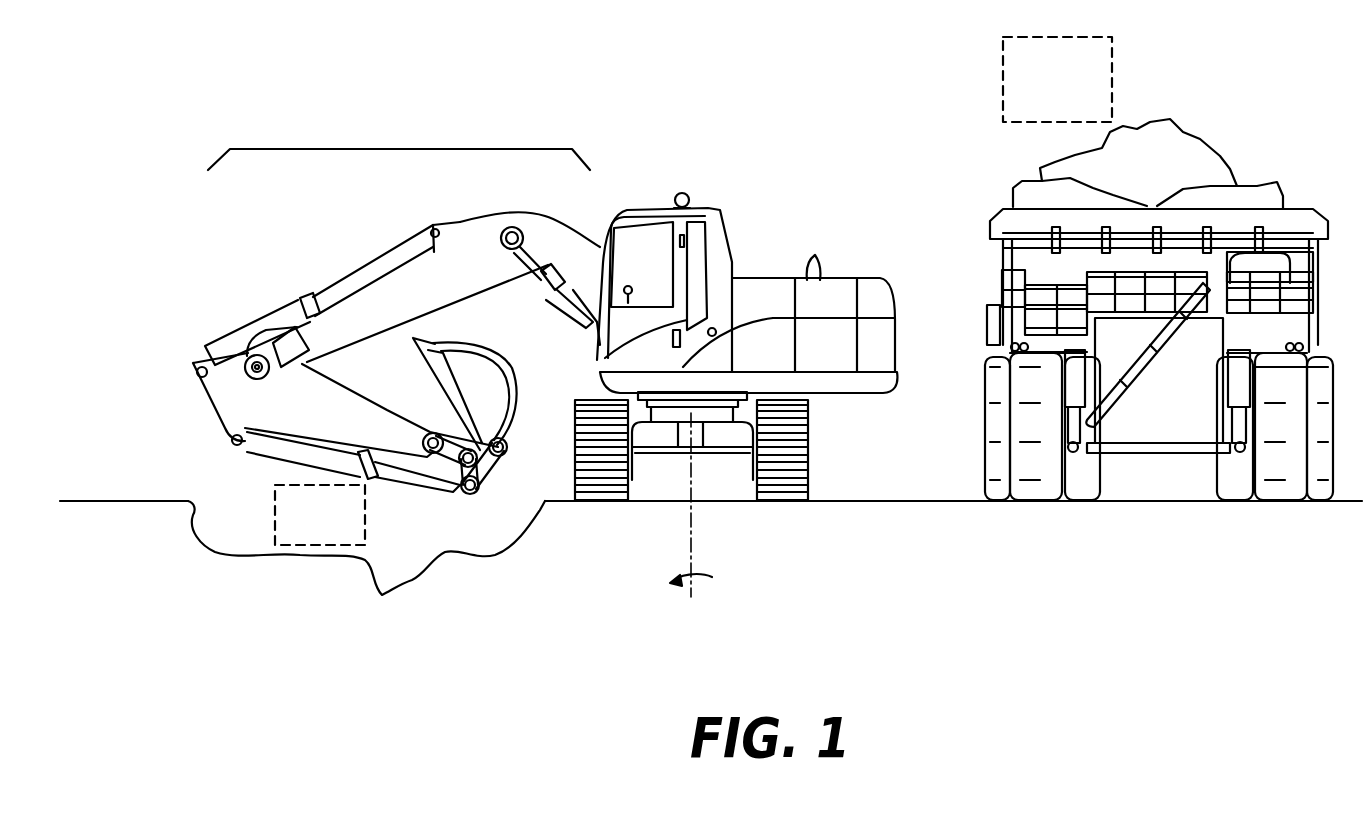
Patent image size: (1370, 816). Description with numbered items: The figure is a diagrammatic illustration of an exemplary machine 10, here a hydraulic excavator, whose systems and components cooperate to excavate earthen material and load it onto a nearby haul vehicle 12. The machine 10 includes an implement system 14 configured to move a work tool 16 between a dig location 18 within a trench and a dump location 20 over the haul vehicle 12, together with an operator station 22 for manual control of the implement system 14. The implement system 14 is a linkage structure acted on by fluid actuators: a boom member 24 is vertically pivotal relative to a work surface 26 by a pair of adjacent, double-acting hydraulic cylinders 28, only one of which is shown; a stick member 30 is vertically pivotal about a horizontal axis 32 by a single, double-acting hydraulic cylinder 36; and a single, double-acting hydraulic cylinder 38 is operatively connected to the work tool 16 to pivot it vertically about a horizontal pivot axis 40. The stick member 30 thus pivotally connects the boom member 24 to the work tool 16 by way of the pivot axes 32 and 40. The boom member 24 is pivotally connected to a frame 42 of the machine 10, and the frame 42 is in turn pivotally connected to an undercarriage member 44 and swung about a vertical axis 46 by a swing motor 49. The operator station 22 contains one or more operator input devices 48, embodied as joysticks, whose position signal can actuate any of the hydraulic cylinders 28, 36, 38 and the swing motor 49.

The machine 10 is at (774, 238).
The haul vehicle 12 is at (1335, 220).
The implement system 14 is at (401, 149).
The work tool 16 is at (475, 393).
The dig location 18 is at (272, 513).
The dump location 20 is at (1114, 75).
The operator station 22 is at (640, 238).
The boom member 24 is at (447, 283).
The work surface 26 is at (900, 501).
The hydraulic cylinders 28 is at (563, 303).
The stick member 30 is at (287, 418).
The horizontal axis 32 is at (255, 347).
The hydraulic cylinder 36 is at (345, 282).
The hydraulic cylinder 38 is at (260, 458).
The horizontal pivot axis 40 is at (486, 482).
The frame 42 is at (872, 380).
The undercarriage member 44 is at (723, 442).
The vertical axis 46 is at (690, 532).
The operator input devices 48 is at (631, 285).
The swing motor 49 is at (665, 412).